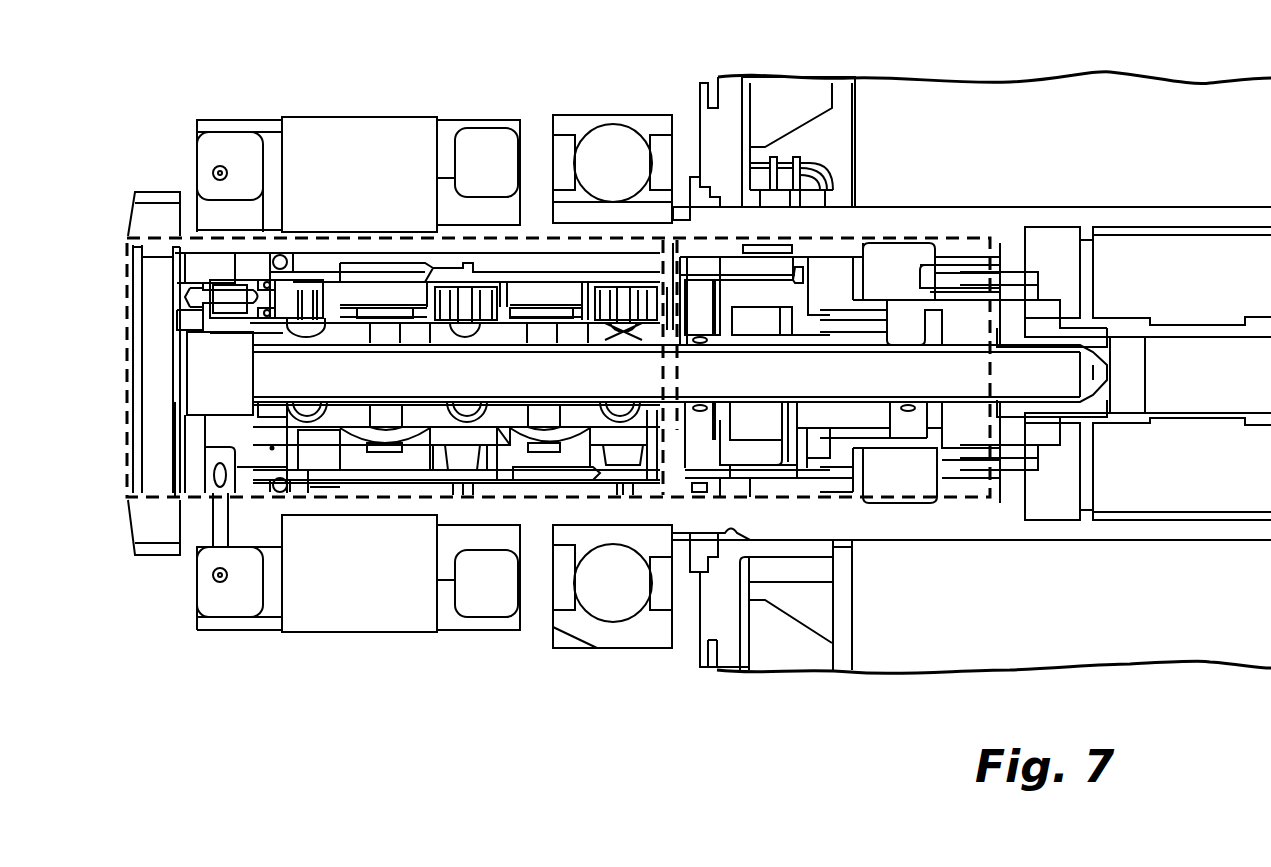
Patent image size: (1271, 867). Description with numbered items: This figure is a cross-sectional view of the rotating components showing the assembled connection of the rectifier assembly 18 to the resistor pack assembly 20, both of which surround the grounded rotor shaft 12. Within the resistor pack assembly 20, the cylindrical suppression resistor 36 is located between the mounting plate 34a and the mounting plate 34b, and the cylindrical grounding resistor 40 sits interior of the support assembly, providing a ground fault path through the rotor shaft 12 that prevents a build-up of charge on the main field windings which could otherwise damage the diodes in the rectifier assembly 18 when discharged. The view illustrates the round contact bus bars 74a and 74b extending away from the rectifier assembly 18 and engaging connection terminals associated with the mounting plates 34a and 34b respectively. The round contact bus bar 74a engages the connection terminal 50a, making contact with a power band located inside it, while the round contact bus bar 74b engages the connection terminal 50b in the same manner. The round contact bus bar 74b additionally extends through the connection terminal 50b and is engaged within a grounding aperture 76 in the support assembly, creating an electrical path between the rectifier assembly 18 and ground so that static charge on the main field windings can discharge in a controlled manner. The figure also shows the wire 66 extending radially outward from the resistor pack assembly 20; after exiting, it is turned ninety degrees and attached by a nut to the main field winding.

The rotor shaft 12 is at (666, 373).
The rectifier assembly 18 is at (212, 232).
The resistor pack assembly 20 is at (872, 232).
The mounting plate 34a is at (722, 320).
The mounting plate 34b is at (788, 415).
The cylindrical suppression resistor 36 is at (758, 320).
The cylindrical grounding resistor 40 is at (868, 328).
The connection terminal 50a is at (763, 266).
The connection terminal 50b is at (770, 478).
The wire 66 is at (781, 158).
The round contact bus bar 74a is at (748, 276).
The round contact bus bar 74b is at (683, 473).
The grounding aperture 76 is at (828, 452).